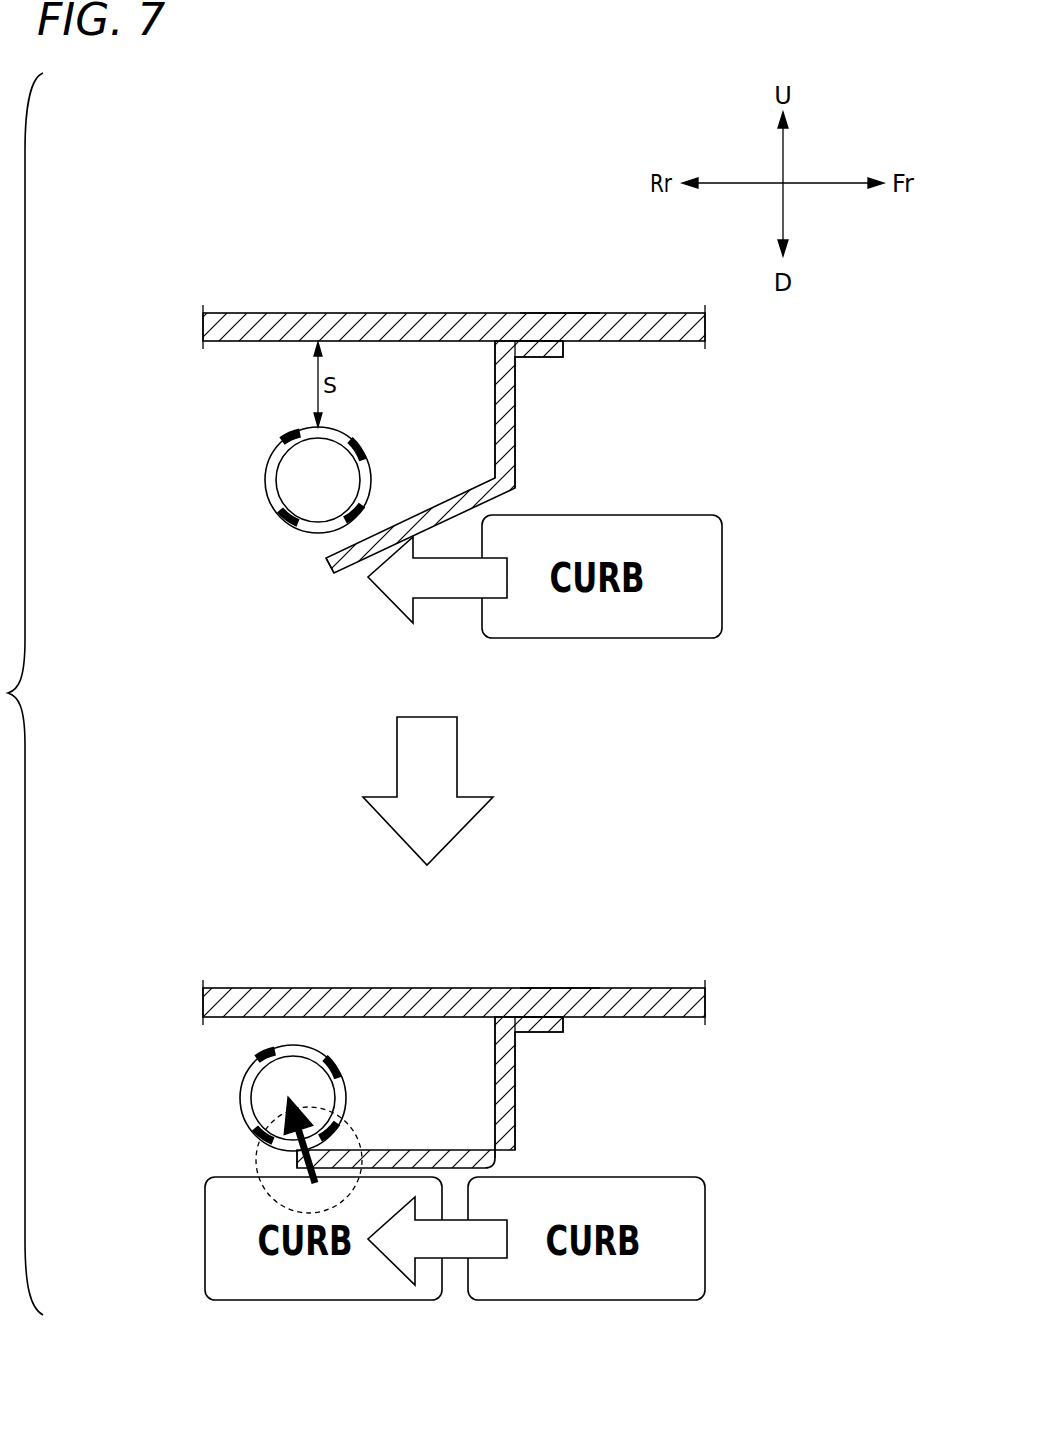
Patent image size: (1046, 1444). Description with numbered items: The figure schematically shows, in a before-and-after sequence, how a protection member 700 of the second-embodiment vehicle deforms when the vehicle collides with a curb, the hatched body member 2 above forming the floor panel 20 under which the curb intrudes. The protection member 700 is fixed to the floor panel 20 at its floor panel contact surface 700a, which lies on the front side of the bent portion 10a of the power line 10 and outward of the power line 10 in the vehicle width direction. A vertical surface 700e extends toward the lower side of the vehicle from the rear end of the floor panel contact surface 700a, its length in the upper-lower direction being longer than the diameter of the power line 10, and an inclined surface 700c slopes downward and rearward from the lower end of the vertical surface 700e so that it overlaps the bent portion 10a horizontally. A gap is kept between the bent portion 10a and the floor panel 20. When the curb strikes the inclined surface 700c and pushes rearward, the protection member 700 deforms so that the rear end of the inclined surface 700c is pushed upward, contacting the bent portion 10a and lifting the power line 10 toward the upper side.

The vehicle body floor panel 2 is at (345, 303).
The floor panel 20 is at (555, 312).
The power line 10 is at (229, 789).
The bent portion 10a is at (265, 477).
The protection member 700 is at (467, 849).
The floor panel contact surface 700a is at (545, 357).
The vertical surface 700e is at (515, 418).
The inclined surface 700c is at (356, 566).